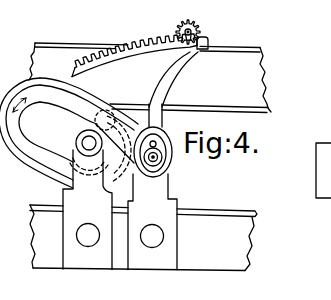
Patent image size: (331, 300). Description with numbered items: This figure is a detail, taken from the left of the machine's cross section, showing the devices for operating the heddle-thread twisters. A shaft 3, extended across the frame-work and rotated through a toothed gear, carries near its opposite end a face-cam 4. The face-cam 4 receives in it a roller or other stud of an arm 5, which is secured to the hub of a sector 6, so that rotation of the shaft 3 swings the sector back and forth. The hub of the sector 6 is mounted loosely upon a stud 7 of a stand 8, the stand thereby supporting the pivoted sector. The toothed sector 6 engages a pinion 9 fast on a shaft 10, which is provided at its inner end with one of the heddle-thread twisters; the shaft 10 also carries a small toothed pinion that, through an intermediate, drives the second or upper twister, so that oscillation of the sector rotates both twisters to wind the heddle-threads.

The shaft 3 is at (48, 187).
The face-cam 4 is at (35, 172).
The arm 5 is at (108, 191).
The sector 6 is at (188, 80).
The stud 7 is at (168, 163).
The stand 8 is at (163, 192).
The pinion 9 is at (203, 27).
The shaft 10 is at (206, 37).